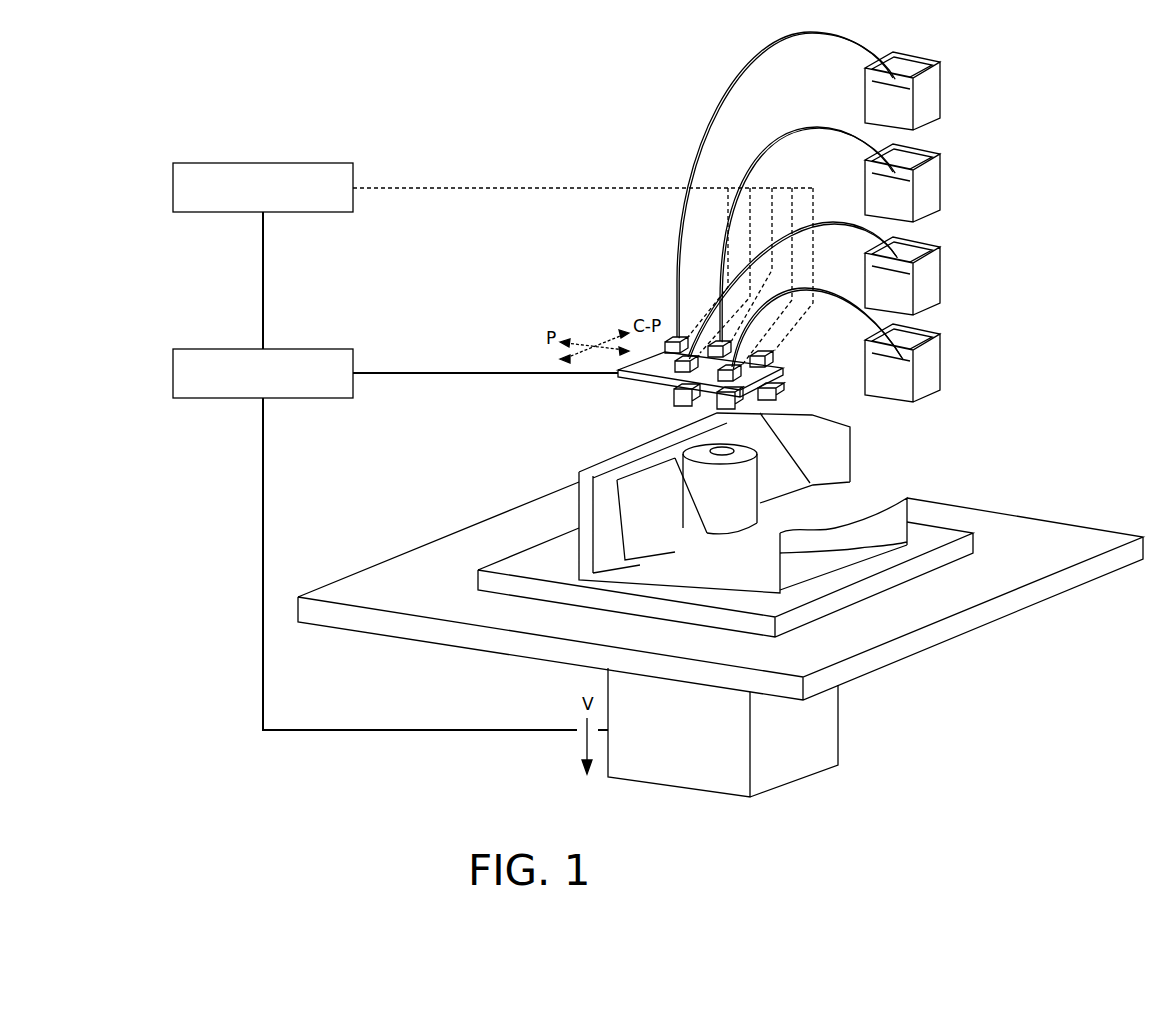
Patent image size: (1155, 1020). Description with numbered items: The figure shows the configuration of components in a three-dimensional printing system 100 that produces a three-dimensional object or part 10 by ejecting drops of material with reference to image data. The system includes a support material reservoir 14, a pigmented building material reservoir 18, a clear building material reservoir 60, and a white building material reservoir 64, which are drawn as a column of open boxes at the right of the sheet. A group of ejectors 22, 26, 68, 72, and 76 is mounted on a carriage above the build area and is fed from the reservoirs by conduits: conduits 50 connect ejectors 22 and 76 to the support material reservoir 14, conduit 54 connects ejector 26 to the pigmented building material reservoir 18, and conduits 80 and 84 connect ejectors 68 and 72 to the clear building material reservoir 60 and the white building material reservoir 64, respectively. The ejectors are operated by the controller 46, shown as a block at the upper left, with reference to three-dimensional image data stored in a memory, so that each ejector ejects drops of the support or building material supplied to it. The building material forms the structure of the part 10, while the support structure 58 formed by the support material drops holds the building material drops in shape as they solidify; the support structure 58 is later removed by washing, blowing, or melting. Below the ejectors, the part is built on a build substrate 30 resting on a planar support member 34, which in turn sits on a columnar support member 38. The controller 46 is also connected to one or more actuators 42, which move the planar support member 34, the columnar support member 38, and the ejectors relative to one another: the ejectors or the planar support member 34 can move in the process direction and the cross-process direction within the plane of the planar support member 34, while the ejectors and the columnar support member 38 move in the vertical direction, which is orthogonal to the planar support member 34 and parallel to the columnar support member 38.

The printing system 100 is at (506, 112).
The controller 46 is at (293, 212).
The actuator 42 is at (293, 398).
The ejector 72 is at (673, 336).
The ejector 68 is at (712, 343).
The ejector 76 is at (668, 373).
The ejector 26 is at (740, 377).
The conduit 84 is at (818, 34).
The conduit 80 is at (826, 129).
The conduit 54 is at (836, 224).
The conduits 50 is at (825, 300).
The white building material reservoir 64 is at (940, 85).
The clear building material reservoir 60 is at (940, 177).
The pigmented building material reservoir 18 is at (940, 270).
The support material reservoir 14 is at (940, 357).
The support structure 58 is at (778, 499).
The ejector 22 is at (760, 405).
The three-dimensional object or part 10 is at (845, 517).
The build substrate 30 is at (865, 580).
The planar support member 34 is at (903, 658).
The columnar support member 38 is at (842, 733).